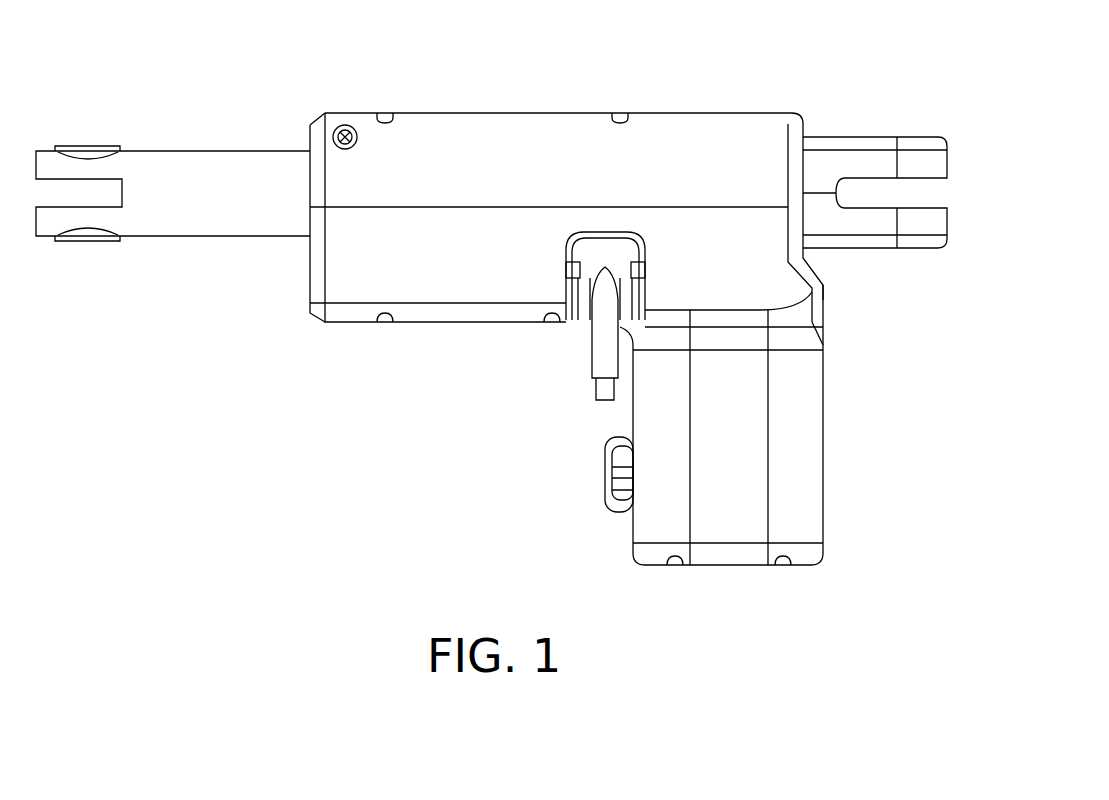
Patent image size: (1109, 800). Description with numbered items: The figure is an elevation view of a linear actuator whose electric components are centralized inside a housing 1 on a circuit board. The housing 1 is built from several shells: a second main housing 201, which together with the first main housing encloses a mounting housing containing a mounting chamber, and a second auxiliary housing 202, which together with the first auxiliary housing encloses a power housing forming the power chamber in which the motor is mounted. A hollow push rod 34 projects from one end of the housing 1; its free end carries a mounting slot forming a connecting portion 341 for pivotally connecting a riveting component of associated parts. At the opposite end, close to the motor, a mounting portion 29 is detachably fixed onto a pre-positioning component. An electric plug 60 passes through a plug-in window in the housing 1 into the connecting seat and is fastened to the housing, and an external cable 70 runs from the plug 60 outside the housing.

The housing 1 is at (491, 309).
The second main housing 201 is at (445, 275).
The second auxiliary housing 202 is at (793, 450).
The push rod 34 is at (173, 230).
The connecting portion 341 is at (75, 218).
The mounting portion 29 is at (878, 228).
The electric plug 60 is at (582, 325).
The external cable 70 is at (600, 400).